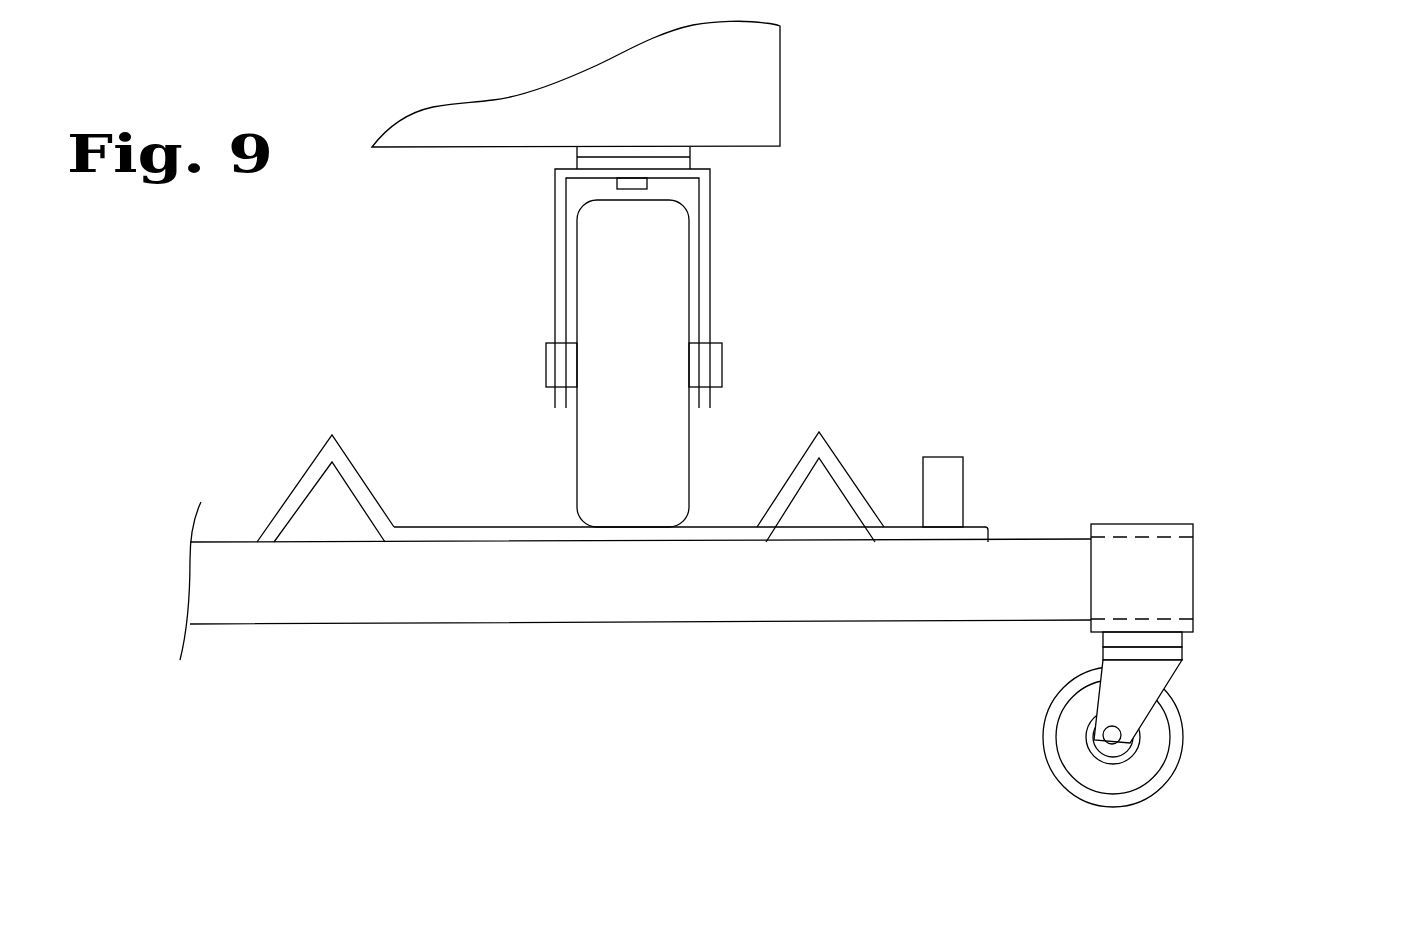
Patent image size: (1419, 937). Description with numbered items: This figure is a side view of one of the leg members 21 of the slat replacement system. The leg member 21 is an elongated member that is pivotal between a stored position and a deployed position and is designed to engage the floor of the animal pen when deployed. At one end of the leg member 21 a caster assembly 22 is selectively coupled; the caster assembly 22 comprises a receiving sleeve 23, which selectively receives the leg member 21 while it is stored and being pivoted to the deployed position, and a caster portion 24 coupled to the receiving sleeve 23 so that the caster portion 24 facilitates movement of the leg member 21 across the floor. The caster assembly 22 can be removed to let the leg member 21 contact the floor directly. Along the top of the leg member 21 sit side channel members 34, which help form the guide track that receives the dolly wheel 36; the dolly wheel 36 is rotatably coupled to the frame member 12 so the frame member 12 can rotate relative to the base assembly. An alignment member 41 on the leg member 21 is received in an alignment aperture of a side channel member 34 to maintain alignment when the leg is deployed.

The frame member 12 is at (737, 70).
The leg member 21 is at (371, 603).
The caster assembly 22 is at (1131, 661).
The receiving sleeve 23 is at (1173, 569).
The caster portion 24 is at (1054, 710).
The side channel member 34 is at (337, 450).
The dolly wheel 36 is at (657, 312).
The alignment member 41 is at (942, 471).